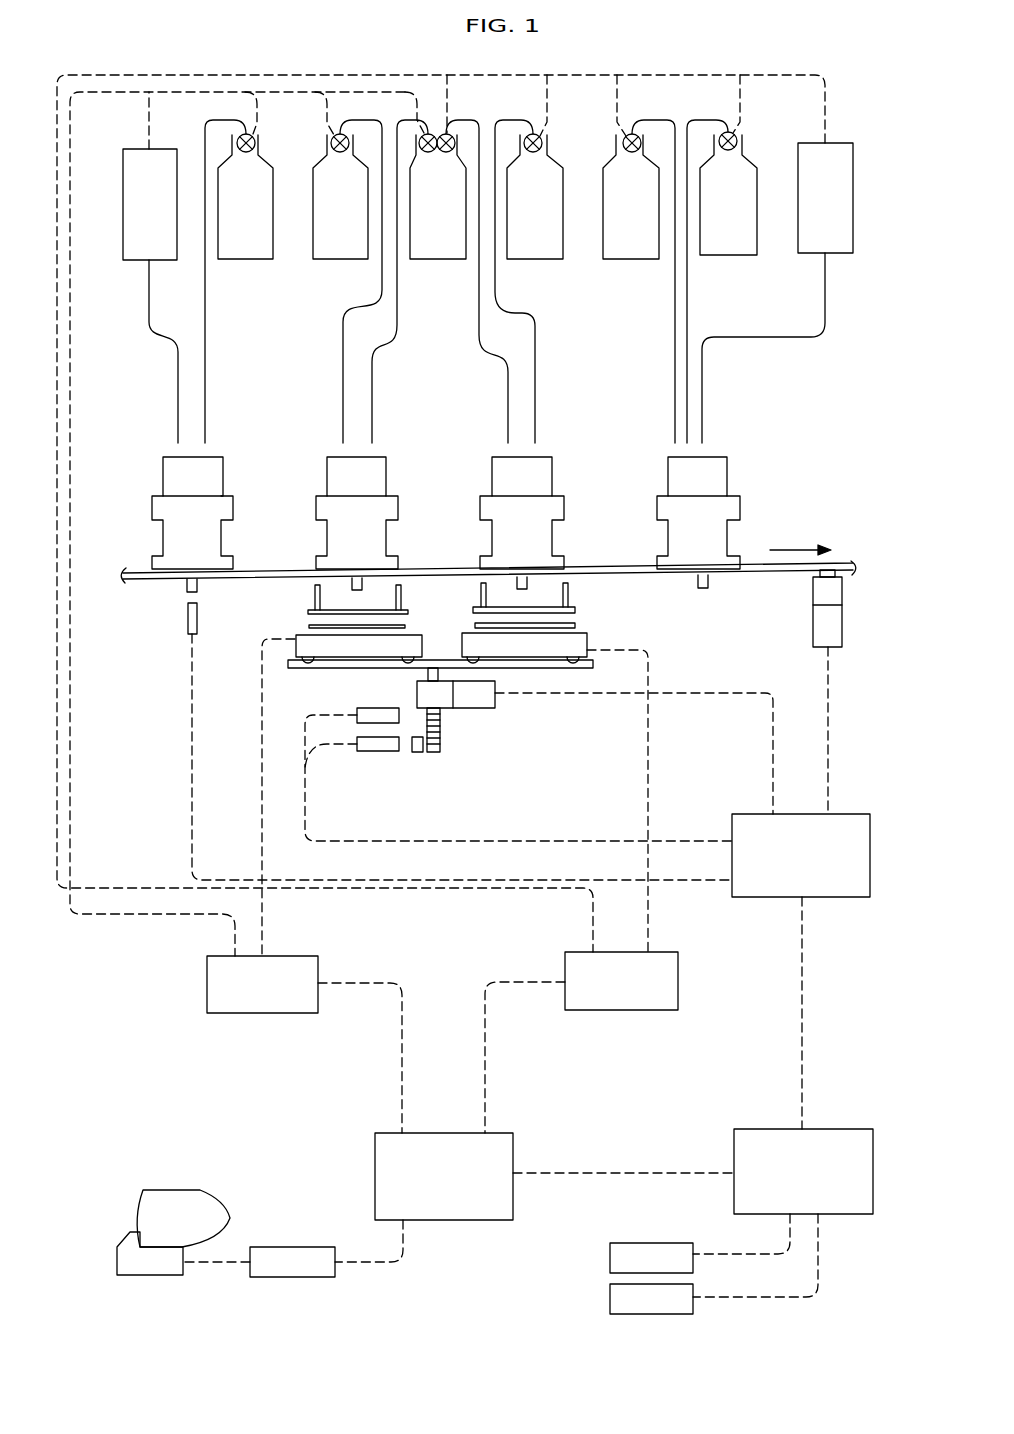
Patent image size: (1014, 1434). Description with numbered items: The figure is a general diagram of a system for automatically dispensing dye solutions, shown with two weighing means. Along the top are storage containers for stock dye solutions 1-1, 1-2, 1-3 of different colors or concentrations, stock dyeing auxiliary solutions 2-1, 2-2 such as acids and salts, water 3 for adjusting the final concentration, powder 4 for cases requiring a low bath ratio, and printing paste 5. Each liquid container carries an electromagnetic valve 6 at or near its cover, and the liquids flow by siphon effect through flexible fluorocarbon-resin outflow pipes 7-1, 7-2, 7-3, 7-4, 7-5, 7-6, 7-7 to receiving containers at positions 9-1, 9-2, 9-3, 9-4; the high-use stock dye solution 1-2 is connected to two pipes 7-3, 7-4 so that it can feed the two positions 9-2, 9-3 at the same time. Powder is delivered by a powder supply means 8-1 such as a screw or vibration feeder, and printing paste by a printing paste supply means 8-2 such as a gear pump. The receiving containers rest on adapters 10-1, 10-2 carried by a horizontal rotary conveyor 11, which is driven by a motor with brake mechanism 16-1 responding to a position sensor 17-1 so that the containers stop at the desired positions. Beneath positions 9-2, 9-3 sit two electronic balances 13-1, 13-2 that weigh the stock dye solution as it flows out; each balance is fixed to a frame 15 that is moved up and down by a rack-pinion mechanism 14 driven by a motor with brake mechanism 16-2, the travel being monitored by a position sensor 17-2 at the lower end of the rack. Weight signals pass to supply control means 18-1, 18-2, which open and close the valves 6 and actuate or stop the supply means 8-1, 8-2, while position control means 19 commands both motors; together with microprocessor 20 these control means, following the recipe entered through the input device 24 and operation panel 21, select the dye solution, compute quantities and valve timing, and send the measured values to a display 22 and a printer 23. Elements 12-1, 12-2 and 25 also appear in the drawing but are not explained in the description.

The stock dye solution 1-1 is at (348, 233).
The stock dye solution 1-2 is at (443, 258).
The stock dye solution 1-3 is at (530, 233).
The dyeing auxiliary 2-1 is at (233, 242).
The dyeing auxiliary 2-2 is at (640, 248).
The water 3 is at (743, 245).
The powder 4 is at (137, 212).
The printing paste 5 is at (837, 157).
The electromagnetic valve 6 is at (254, 138).
The outflow pipe 7-1 is at (206, 352).
The outflow pipe 7-2 is at (343, 402).
The outflow pipe 7-3 is at (372, 402).
The outflow pipe 7-4 is at (507, 416).
The outflow pipe 7-5 is at (535, 398).
The outflow pipe 7-6 is at (673, 348).
The outflow pipe 7-7 is at (688, 312).
The powder supply means 8-1 is at (155, 297).
The printing paste supply means 8-2 is at (737, 342).
The receiving container position 9-1 is at (212, 473).
The receiving container position 9-2 is at (372, 473).
The receiving container position 9-3 is at (548, 468).
The receiving container position 9-4 is at (720, 462).
The adapter 10-1 is at (220, 513).
The adapter 10-2 is at (388, 510).
The horizontal rotary conveyor 11 is at (830, 557).
The lifting device 12-1 is at (401, 593).
The lifting device 12-2 is at (568, 590).
The electronic balance 13-1 is at (407, 622).
The electronic balance 13-2 is at (575, 621).
The rack-pinion mechanism 14 is at (440, 712).
The frame 15 is at (573, 667).
The motor with brake mechanism 16-1 is at (823, 620).
The motor with brake mechanism 16-2 is at (482, 705).
The position sensor 17-1 is at (188, 623).
The position sensor 17-2 is at (388, 750).
The supply control means 18-1 is at (223, 988).
The supply control means 18-2 is at (583, 980).
The position control means 19 is at (777, 890).
The microprocessor 20 is at (505, 1152).
The operation panel 21 is at (777, 1150).
The display 22 is at (653, 1247).
The printer 23 is at (612, 1305).
The input device 24 is at (186, 1200).
The interface 25 is at (300, 1257).